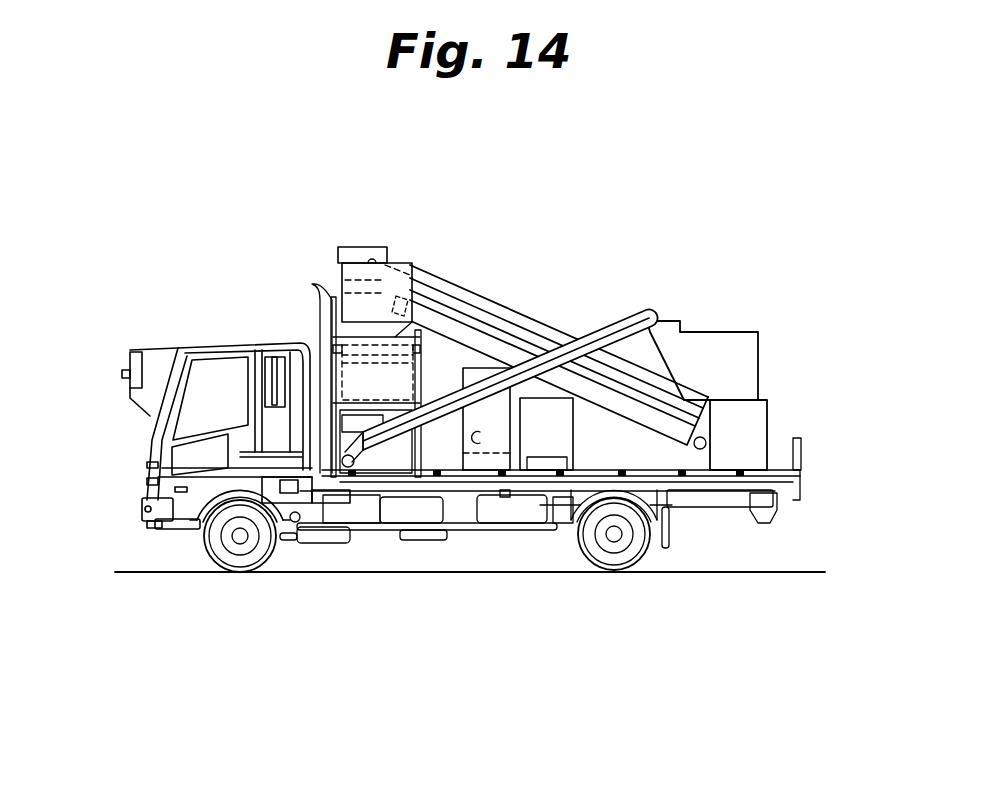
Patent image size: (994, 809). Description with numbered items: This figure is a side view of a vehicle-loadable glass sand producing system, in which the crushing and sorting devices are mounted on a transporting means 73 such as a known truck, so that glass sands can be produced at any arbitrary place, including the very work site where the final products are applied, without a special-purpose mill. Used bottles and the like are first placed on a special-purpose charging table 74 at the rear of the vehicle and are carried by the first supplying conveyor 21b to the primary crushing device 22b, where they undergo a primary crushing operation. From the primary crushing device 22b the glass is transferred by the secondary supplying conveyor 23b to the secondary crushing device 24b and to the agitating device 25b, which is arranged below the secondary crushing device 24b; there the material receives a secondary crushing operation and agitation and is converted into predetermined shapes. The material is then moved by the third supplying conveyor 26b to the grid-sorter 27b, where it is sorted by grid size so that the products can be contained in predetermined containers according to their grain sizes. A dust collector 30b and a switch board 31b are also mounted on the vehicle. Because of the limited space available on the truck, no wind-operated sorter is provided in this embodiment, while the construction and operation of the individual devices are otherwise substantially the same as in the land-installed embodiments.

The first supplying conveyor 21b is at (652, 412).
The primary crushing device 22b is at (319, 325).
The secondary supplying conveyor 23b is at (623, 318).
The secondary crushing device 24b is at (736, 322).
The agitating device 25b is at (723, 343).
The third supplying conveyor 26b is at (497, 310).
The grid-sorter 27b is at (368, 252).
The dust collector 30b is at (487, 468).
The switch board 31b is at (535, 440).
The transporting means 73 is at (235, 558).
The charging table 74 is at (755, 435).